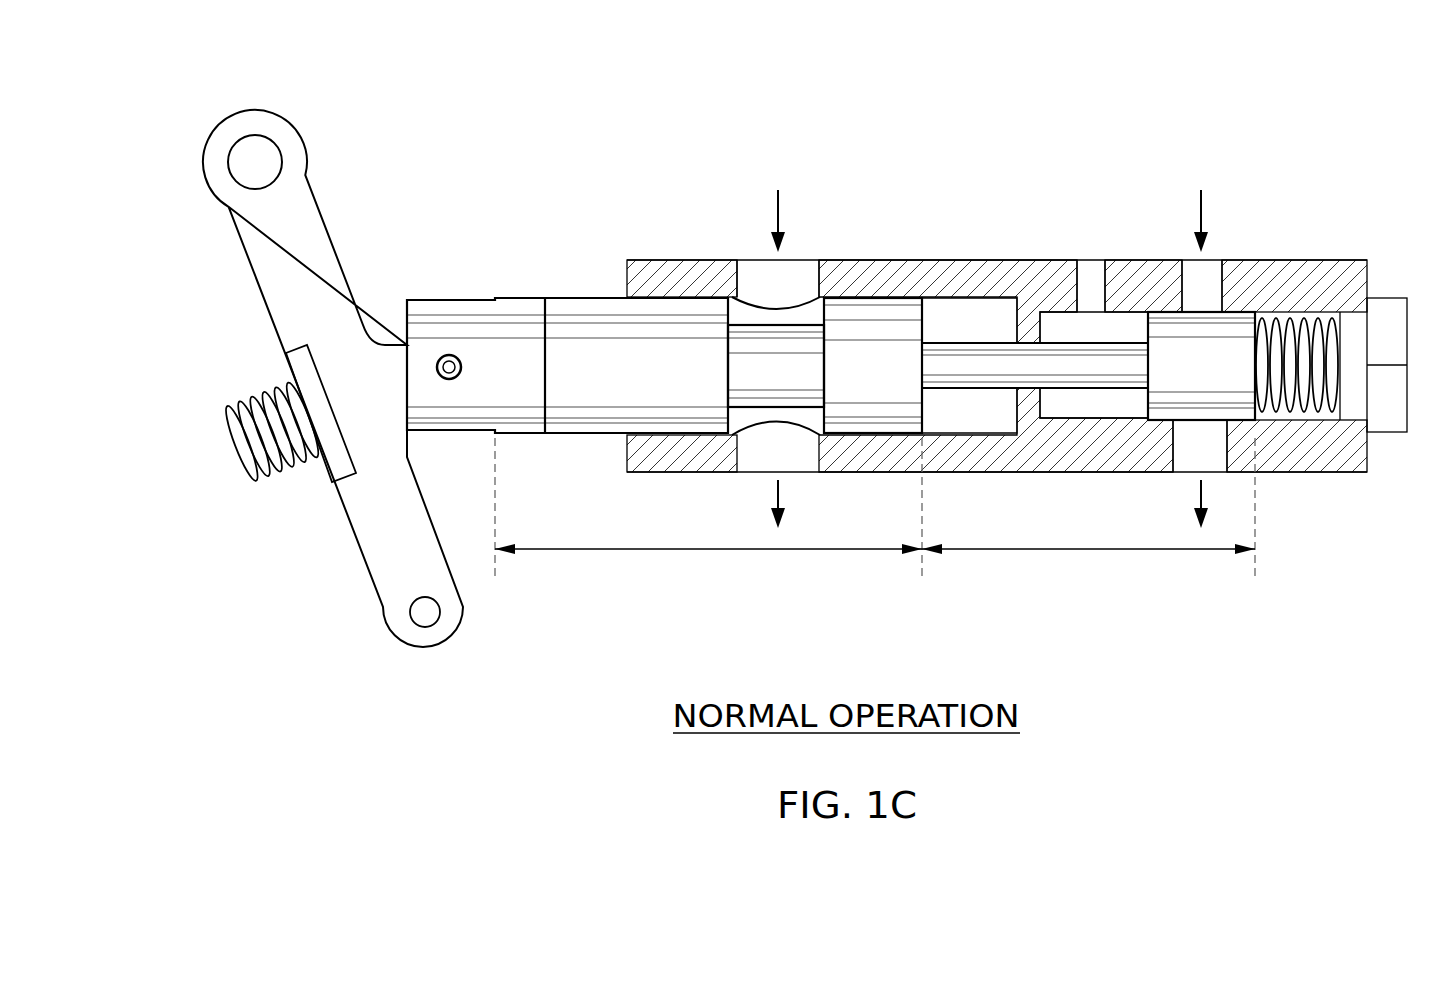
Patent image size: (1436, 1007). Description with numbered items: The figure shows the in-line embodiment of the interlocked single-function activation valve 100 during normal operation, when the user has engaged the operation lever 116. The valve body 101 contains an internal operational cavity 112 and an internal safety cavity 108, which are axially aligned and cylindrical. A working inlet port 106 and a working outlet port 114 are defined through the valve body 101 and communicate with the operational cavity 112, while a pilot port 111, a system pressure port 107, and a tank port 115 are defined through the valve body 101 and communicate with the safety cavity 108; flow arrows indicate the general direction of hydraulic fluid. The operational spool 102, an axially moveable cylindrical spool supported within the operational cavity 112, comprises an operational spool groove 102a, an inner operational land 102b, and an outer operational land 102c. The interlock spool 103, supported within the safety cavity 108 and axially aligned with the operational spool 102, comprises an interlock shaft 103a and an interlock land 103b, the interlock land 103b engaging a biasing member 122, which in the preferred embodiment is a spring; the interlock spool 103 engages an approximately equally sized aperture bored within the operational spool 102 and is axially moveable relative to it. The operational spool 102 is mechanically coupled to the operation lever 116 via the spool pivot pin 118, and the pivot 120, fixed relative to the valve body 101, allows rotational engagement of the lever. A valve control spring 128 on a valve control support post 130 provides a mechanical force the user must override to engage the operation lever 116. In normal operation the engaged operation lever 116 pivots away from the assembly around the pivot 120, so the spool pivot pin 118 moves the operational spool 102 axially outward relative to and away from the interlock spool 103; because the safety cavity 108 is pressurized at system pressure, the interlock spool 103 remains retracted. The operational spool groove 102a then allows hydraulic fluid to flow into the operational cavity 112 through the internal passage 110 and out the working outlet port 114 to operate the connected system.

The interlocked single-function activation valve 100 is at (1310, 106).
The valve body 101 is at (682, 275).
The operational spool 102 is at (710, 552).
The operational spool groove 102a is at (745, 375).
The inner operational land 102b is at (862, 375).
The outer operational land 102c is at (672, 375).
The interlock spool 103 is at (1088, 552).
The interlock shaft 103a is at (1078, 367).
The interlock land 103b is at (1233, 378).
The working inlet port 106 is at (806, 277).
The system pressure port 107 is at (1212, 288).
The safety cavity 108 is at (1048, 327).
The internal passage 110 is at (807, 317).
The pilot port 111 is at (1096, 297).
The operational cavity 112 is at (967, 315).
The working outlet port 114 is at (797, 448).
The tank port 115 is at (1187, 448).
The operation lever 116 is at (277, 238).
The spool pivot pin 118 is at (449, 380).
The pivot 120 is at (418, 612).
The biasing member 122 is at (1322, 317).
The valve control spring 128 is at (228, 398).
The valve control support post 130 is at (258, 467).